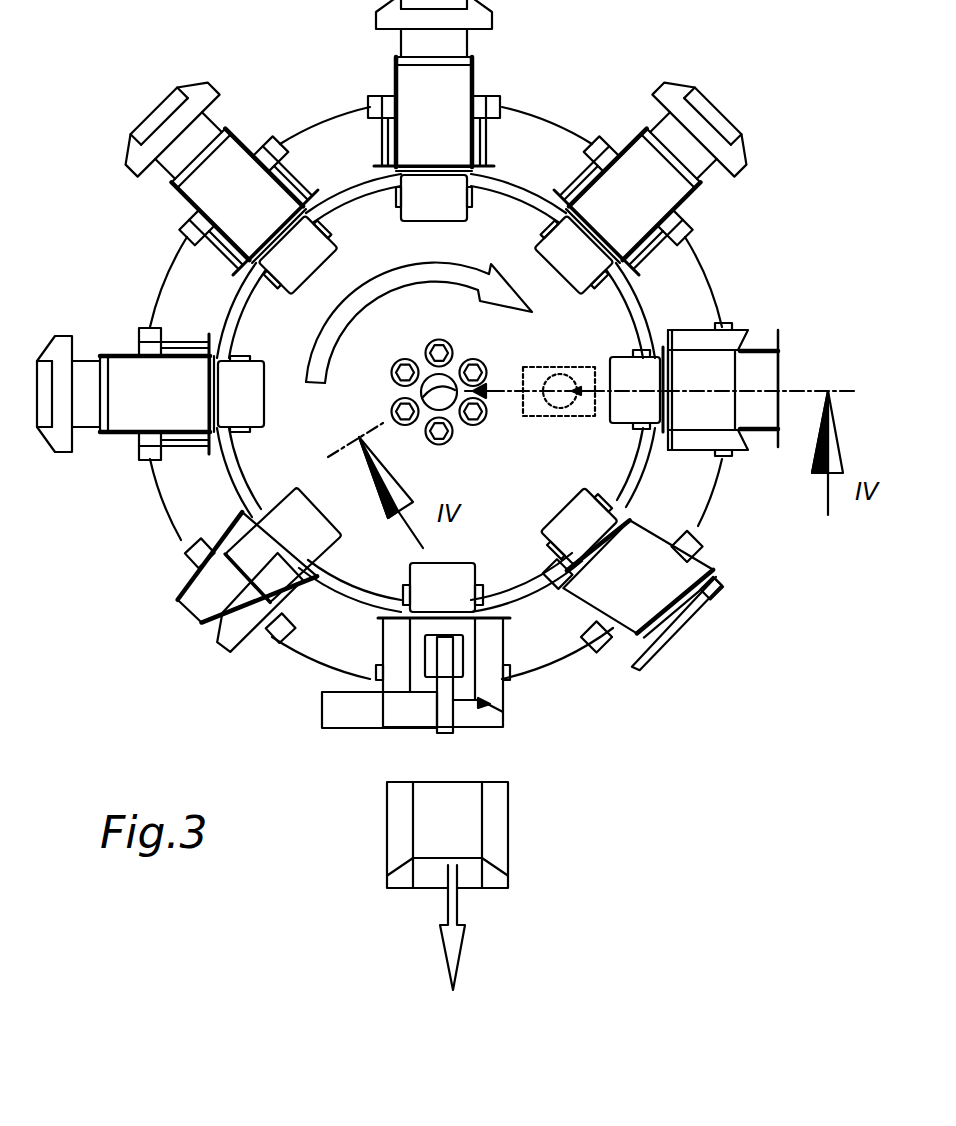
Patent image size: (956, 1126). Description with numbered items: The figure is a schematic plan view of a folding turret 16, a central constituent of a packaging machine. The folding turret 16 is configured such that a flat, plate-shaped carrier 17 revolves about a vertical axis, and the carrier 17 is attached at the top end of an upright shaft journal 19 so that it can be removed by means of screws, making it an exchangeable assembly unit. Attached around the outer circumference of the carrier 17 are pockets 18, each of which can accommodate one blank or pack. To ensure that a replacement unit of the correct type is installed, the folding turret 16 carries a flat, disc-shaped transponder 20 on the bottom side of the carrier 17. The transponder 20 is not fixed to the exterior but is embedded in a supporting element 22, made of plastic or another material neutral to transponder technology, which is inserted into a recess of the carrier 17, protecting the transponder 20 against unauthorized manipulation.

The folding turret 16 is at (565, 698).
The carrier 17 is at (640, 298).
The pockets 18 is at (178, 440).
The shaft journal 19 is at (371, 110).
The transponder 20 is at (547, 415).
The supporting element 22 is at (577, 414).